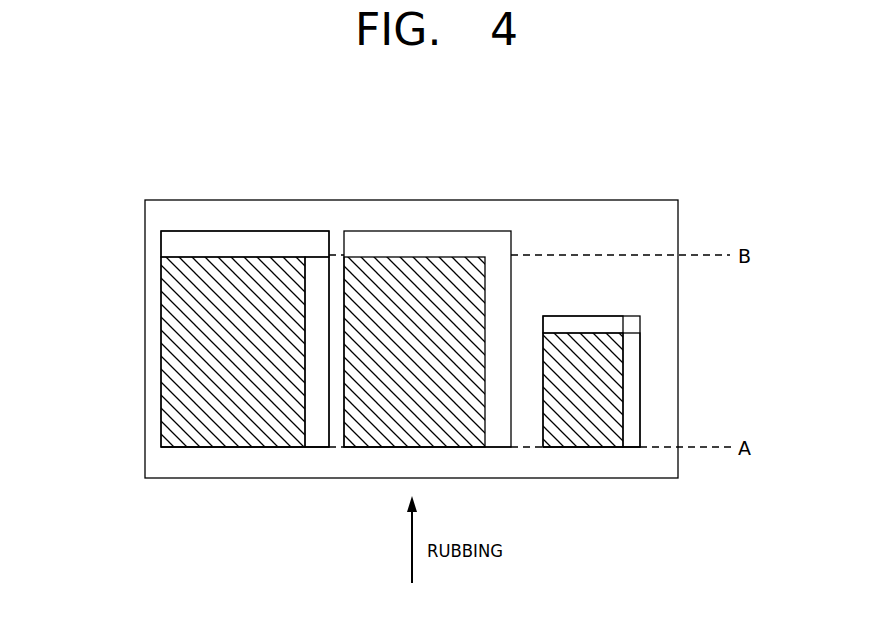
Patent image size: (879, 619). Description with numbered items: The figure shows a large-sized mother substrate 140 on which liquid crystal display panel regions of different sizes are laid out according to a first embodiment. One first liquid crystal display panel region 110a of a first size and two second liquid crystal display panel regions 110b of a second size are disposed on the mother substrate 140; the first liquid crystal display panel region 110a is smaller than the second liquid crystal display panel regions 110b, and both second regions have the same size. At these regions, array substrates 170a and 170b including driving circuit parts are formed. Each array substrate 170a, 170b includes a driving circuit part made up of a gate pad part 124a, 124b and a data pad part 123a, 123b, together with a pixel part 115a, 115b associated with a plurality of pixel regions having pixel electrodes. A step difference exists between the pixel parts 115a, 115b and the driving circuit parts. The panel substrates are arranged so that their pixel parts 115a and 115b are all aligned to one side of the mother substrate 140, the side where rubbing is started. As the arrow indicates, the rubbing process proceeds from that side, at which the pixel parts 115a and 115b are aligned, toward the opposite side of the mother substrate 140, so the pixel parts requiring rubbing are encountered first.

The mother substrate 140 is at (691, 178).
The first liquid crystal display panel region 110a is at (640, 369).
The second liquid crystal display panel region 110b is at (160, 302).
The pixel part 115a is at (607, 435).
The pixel part 115b is at (183, 437).
The data pad part 123a is at (628, 355).
The data pad part 123b is at (318, 290).
The gate pad part 124a is at (578, 322).
The gate pad part 124b is at (212, 245).
The array substrate 170a is at (553, 447).
The array substrate 170b is at (258, 447).